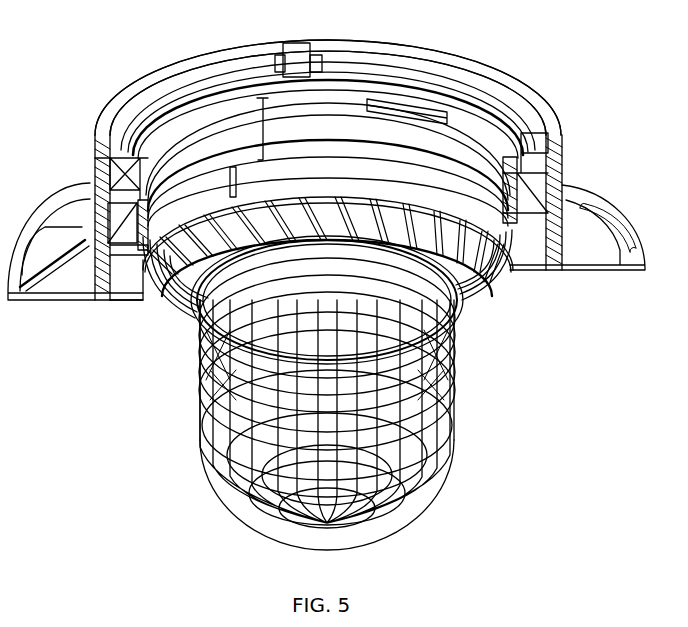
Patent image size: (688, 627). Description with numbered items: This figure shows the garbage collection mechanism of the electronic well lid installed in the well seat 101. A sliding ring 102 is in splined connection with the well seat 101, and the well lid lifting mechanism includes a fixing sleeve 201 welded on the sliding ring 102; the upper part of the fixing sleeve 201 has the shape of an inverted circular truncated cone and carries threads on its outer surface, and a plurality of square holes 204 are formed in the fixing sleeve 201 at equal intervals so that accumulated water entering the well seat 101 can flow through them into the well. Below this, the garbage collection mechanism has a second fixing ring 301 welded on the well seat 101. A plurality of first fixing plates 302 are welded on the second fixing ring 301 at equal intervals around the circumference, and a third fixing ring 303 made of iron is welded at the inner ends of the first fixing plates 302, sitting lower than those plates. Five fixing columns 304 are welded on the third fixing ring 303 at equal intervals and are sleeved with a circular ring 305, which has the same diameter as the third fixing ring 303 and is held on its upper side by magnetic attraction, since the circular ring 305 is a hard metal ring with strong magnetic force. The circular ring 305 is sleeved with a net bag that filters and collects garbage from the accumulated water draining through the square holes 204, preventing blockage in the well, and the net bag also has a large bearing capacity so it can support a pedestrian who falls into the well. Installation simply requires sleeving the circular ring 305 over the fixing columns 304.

The well seat 101 is at (99, 119).
The sliding ring 102 is at (140, 88).
The fixing sleeve 201 is at (348, 88).
The square holes 204 is at (413, 95).
The second fixing ring 301 is at (113, 312).
The first fixing plates 302 is at (164, 305).
The third fixing ring 303 is at (189, 318).
The fixing columns 304 is at (461, 327).
The circular ring 305 is at (463, 352).